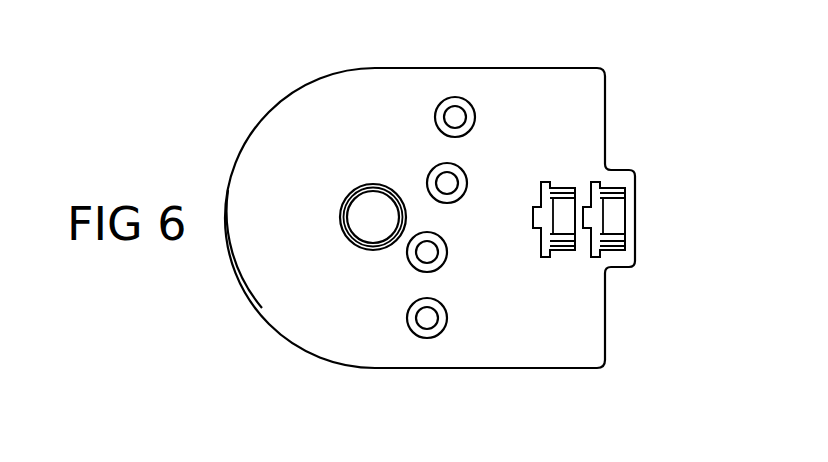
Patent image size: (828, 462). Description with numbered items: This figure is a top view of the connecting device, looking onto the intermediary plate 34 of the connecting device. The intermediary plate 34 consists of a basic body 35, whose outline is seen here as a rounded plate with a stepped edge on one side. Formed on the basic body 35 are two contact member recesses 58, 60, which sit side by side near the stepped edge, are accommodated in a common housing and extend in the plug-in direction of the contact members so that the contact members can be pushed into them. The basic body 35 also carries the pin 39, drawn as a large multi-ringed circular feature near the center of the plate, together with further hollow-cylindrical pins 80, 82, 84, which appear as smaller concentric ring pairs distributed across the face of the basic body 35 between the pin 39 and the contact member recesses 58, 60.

The intermediary plate 34 is at (213, 159).
The basic body 35 is at (257, 270).
The pin 39 is at (354, 204).
The contact member recess 58 is at (562, 185).
The contact member recess 60 is at (618, 187).
The hollow-cylindrical pin 80 is at (457, 112).
The hollow-cylindrical pin 82 is at (440, 184).
The hollow-cylindrical pin 84 is at (432, 252).